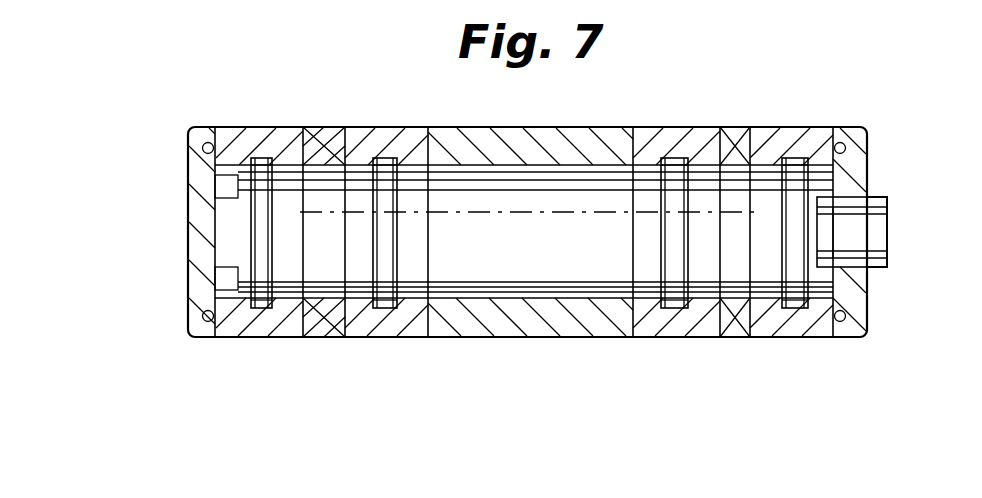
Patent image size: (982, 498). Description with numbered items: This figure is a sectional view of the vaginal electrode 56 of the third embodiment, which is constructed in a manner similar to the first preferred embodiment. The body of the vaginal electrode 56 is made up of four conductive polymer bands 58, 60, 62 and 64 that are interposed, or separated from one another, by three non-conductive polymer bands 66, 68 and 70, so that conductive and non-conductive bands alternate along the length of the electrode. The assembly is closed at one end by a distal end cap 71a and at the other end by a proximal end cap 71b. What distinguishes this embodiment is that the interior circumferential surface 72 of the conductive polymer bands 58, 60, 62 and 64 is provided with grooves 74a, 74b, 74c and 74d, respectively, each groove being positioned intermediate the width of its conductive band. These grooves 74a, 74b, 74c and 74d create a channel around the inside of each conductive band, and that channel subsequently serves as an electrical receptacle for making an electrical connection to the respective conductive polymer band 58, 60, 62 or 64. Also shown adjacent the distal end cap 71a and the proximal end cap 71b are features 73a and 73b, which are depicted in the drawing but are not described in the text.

The vaginal electrode 56 is at (527, 286).
The conductive polymer band 58 is at (257, 202).
The conductive polymer band 60 is at (352, 202).
The conductive polymer band 62 is at (553, 195).
The conductive polymer band 64 is at (766, 201).
The non-conductive polymer band 66 is at (321, 338).
The non-conductive polymer band 68 is at (530, 353).
The non-conductive polymer band 70 is at (733, 279).
The distal end cap 71a is at (167, 226).
The proximal end cap 71b is at (890, 245).
The interior circumferential surface 72 is at (535, 229).
The O-ring seals 73a is at (202, 149).
The O-ring seals 73b is at (846, 314).
The groove 74a is at (247, 282).
The groove 74b is at (392, 283).
The groove 74c is at (655, 338).
The groove 74d is at (807, 295).